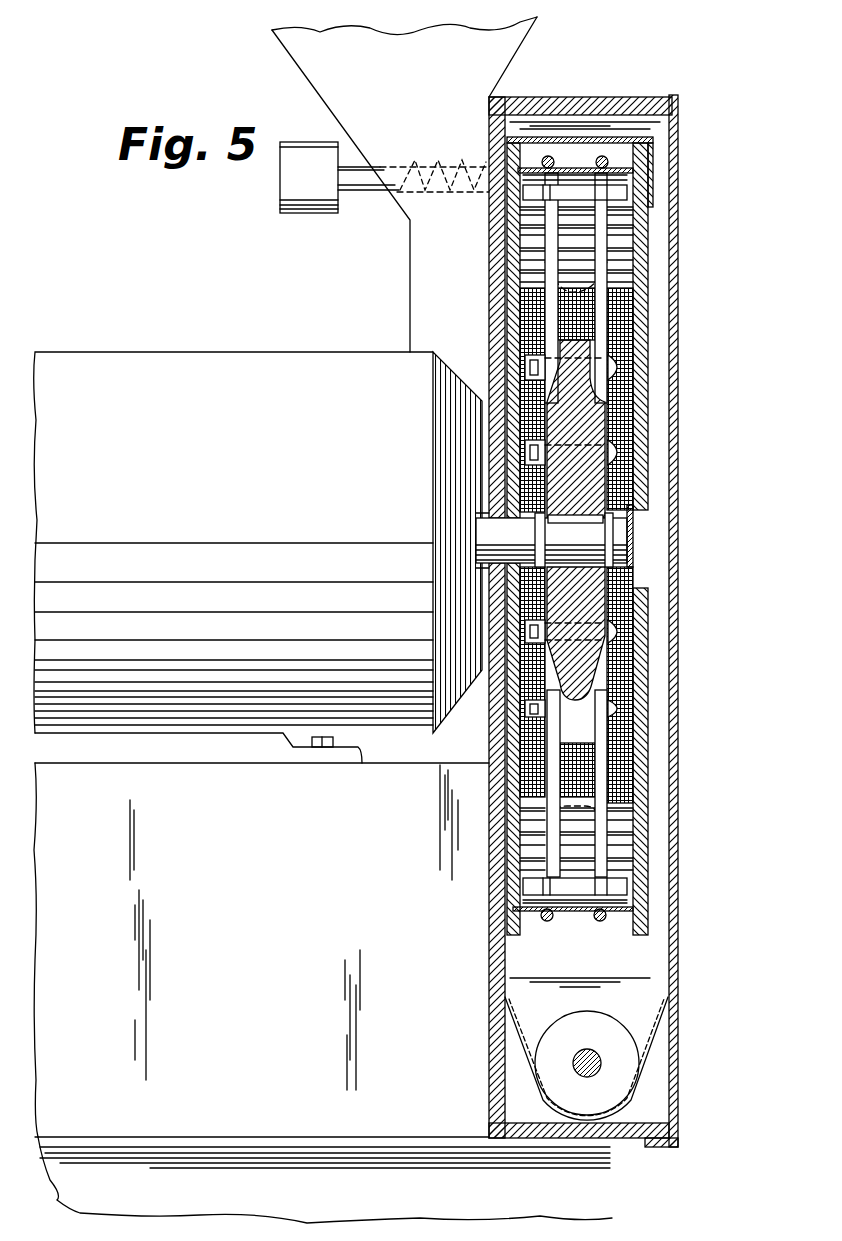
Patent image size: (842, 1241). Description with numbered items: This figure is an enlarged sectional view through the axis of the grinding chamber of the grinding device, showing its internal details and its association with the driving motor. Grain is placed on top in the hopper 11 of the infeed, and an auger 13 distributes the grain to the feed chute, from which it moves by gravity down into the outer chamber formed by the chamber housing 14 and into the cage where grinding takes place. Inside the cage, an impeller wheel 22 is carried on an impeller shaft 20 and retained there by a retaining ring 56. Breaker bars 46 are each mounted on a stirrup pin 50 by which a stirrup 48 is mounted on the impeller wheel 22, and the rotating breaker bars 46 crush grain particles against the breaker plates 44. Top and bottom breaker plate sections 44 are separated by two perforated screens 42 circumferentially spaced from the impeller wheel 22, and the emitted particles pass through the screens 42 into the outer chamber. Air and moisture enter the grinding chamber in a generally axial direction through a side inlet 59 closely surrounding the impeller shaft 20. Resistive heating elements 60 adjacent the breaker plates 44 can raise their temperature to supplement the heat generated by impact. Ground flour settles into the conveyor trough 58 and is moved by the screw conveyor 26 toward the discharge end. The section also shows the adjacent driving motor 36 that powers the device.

The hopper 11 is at (438, 22).
The auger 13 is at (448, 206).
The chamber housing 14 is at (557, 96).
The impeller shaft 20 is at (640, 555).
The impeller wheel 22 is at (592, 600).
The screw conveyor 26 is at (548, 1062).
The motor block 36 is at (167, 362).
The screens 42 is at (600, 420).
The breaker plates 44 is at (622, 240).
The breaker bars 46 is at (640, 190).
The stirrup 48 is at (642, 300).
The stirrup pin 50 is at (625, 372).
The retaining ring 56 is at (612, 535).
The conveyor trough 58 is at (648, 1063).
The side inlet 59 is at (648, 510).
The resistive heating elements 60 is at (604, 158).